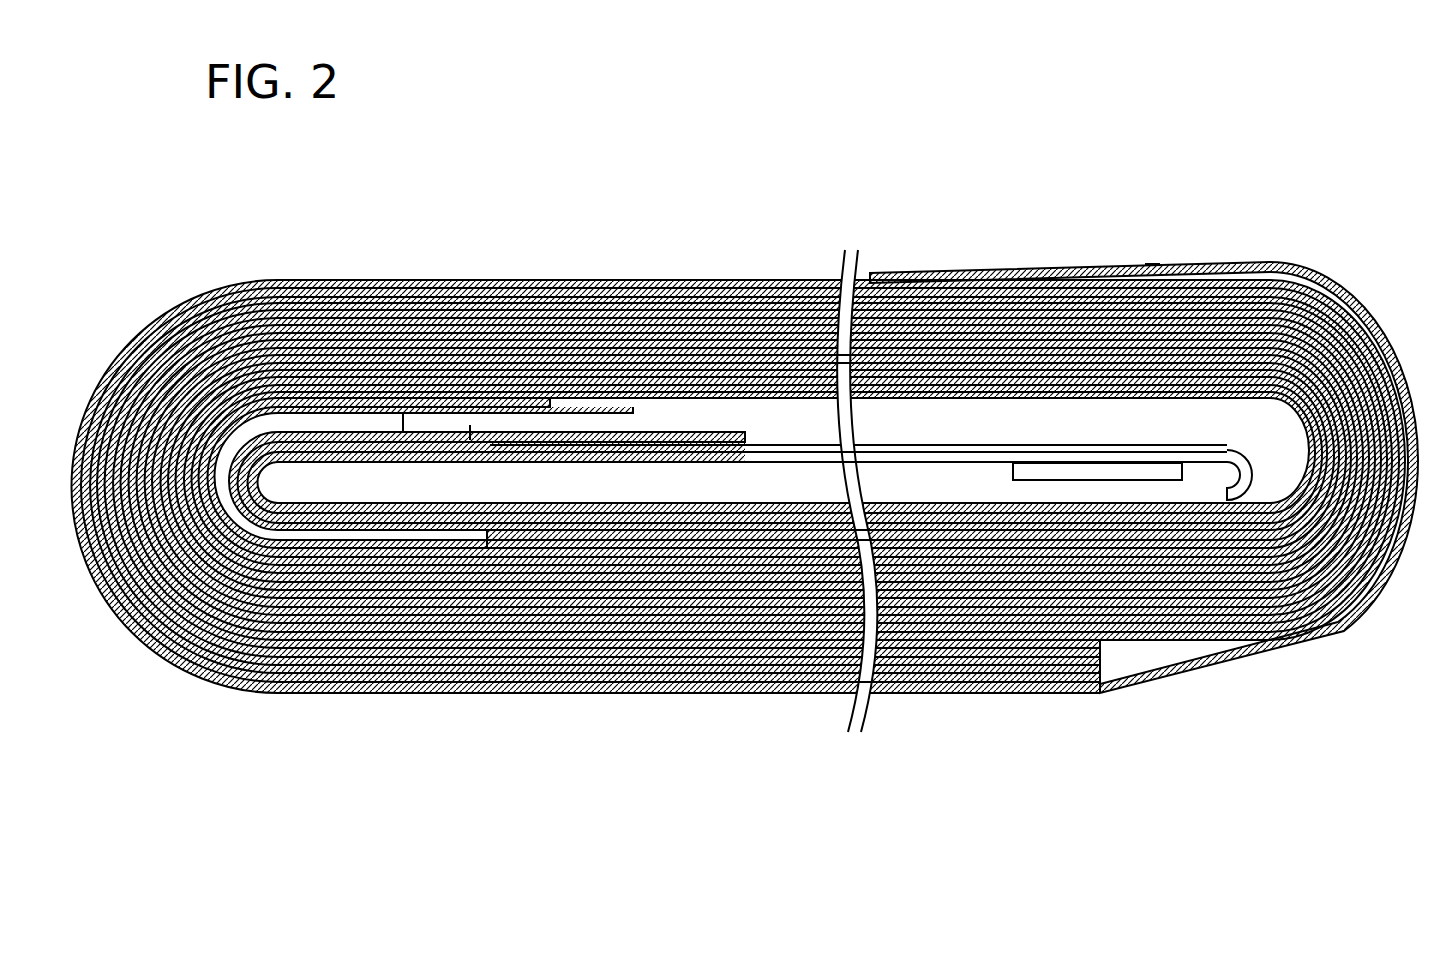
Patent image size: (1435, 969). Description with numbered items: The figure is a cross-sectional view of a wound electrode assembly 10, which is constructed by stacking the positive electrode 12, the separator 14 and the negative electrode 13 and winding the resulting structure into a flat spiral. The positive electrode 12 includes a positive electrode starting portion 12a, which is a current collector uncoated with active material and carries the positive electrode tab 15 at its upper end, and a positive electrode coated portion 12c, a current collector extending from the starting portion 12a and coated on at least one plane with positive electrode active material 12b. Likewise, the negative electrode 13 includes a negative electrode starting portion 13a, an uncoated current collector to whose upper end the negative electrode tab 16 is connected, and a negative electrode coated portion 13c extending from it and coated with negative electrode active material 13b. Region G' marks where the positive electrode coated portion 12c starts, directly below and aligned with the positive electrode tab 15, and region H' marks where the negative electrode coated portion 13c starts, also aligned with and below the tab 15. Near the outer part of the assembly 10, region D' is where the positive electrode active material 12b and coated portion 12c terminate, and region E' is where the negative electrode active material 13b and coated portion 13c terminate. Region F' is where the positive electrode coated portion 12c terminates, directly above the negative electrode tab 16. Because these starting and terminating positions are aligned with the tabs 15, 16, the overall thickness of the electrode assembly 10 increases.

The electrode assembly 10 is at (1167, 232).
The positive electrode 12 is at (563, 196).
The positive electrode starting portion 12a is at (552, 407).
The positive electrode active material 12b is at (608, 540).
The positive electrode coated portion 12c is at (653, 530).
The negative electrode 13 is at (1017, 176).
The negative electrode starting portion 13a is at (997, 457).
The negative electrode active material 13b is at (910, 360).
The negative electrode coated portion 13c is at (958, 360).
The separator 14 is at (720, 433).
The positive electrode tab 15 is at (503, 425).
The negative electrode tab 16 is at (1100, 470).
The region H' is at (445, 324).
The region F' is at (1158, 205).
The region E' is at (1171, 671).
The region D' is at (1142, 710).
The region G' is at (513, 657).